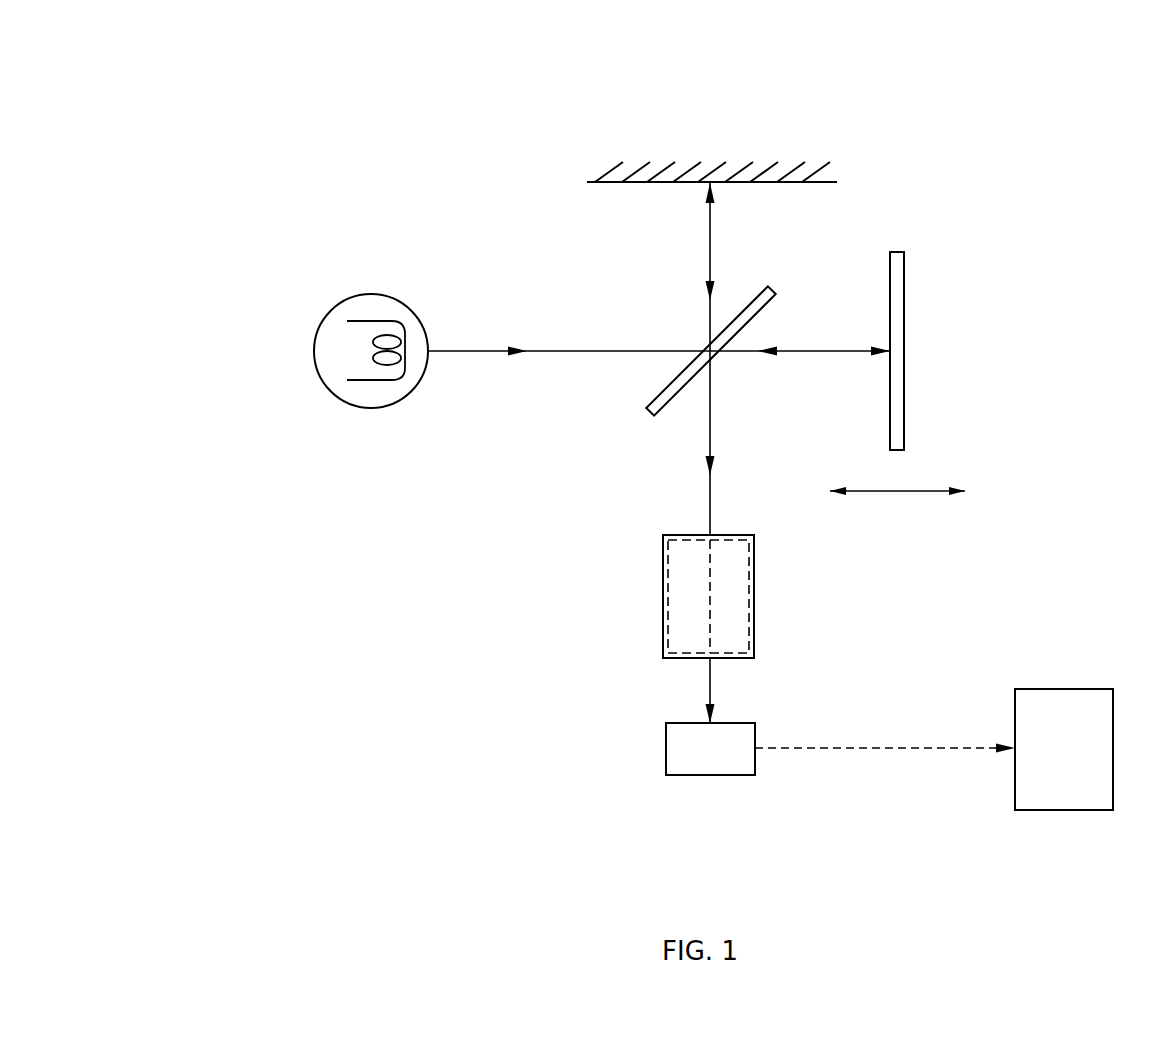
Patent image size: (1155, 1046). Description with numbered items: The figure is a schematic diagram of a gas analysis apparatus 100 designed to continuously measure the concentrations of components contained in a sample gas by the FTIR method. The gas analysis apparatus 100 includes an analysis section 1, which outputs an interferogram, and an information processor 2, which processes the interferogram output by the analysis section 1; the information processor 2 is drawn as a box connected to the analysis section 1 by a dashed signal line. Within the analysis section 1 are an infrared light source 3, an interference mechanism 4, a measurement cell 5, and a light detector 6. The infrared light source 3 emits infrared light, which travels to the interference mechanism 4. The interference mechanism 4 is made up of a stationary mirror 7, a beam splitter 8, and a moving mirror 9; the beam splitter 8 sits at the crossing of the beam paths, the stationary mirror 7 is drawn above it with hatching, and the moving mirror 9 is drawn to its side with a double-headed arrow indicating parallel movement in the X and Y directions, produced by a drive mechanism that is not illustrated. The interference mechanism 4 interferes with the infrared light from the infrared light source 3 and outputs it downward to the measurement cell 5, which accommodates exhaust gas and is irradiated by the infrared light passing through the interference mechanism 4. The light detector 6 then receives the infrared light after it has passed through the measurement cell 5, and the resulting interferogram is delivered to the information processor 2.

The gas analysis apparatus 100 is at (309, 103).
The analysis section 1 is at (518, 221).
The information processor 2 is at (1065, 689).
The infrared light source 3 is at (371, 293).
The interference mechanism 4 is at (979, 163).
The measurement cell 5 is at (663, 594).
The light detector 6 is at (666, 747).
The stationary mirror 7 is at (816, 183).
The beam splitter 8 is at (777, 290).
The moving mirror 9 is at (904, 325).